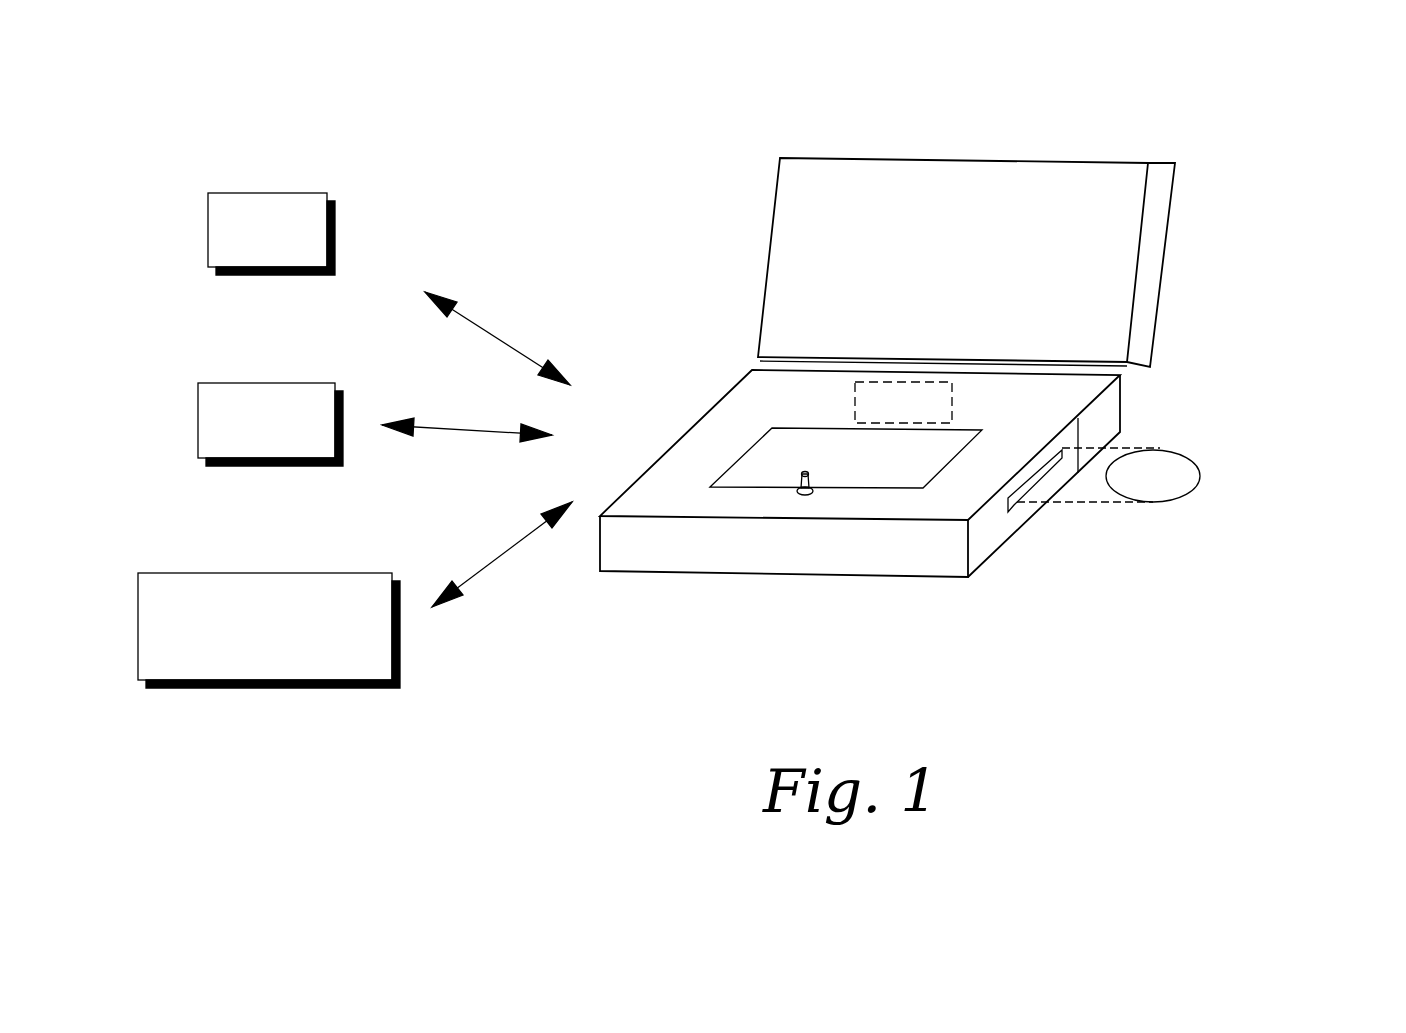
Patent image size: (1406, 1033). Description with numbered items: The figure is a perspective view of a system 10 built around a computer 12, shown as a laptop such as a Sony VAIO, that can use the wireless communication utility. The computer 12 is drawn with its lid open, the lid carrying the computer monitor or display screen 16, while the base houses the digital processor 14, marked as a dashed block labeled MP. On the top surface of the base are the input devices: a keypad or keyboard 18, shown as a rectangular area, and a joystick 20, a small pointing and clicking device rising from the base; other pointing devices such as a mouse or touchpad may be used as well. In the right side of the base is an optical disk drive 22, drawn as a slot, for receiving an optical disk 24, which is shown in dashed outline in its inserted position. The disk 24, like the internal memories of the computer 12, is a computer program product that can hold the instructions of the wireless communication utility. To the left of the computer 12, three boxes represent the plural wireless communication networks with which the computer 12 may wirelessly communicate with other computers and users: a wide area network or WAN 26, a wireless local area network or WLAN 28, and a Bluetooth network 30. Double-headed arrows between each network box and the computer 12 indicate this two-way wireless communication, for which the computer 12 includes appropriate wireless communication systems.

The system 10 is at (1225, 165).
The computer 12 is at (1107, 410).
The digital processor 14 is at (885, 380).
The computer monitor or display screen 16 is at (1088, 182).
The keypad or keyboard 18 is at (812, 443).
The joystick 20 is at (805, 477).
The optical disk drive 22 is at (1043, 477).
The optical disk 24 is at (1173, 465).
The wide area network (WAN) 26 is at (310, 198).
The wireless local area network (WLAN) 28 is at (318, 390).
The Bluetooth network 30 is at (373, 580).